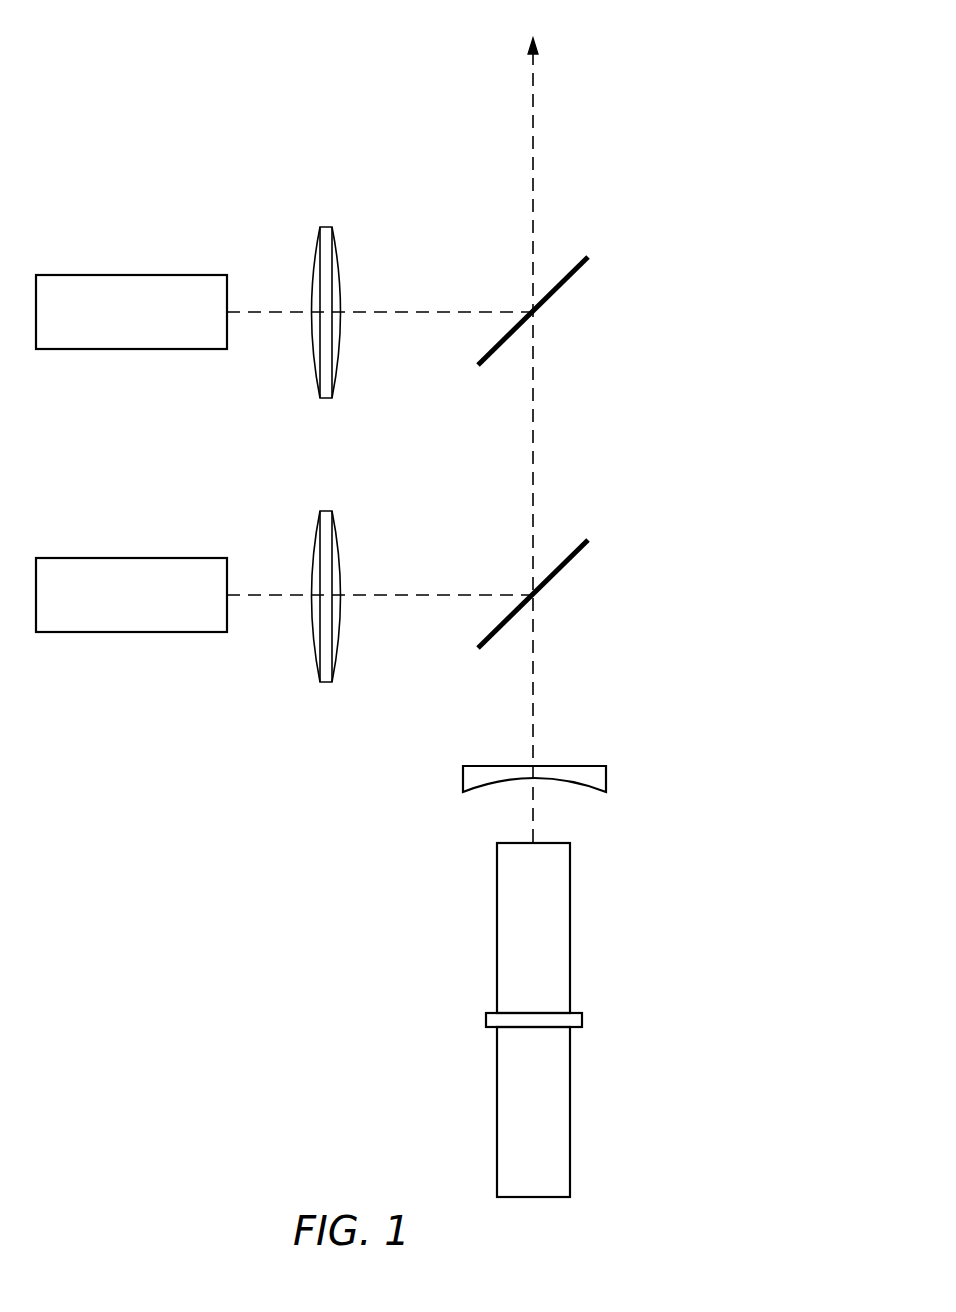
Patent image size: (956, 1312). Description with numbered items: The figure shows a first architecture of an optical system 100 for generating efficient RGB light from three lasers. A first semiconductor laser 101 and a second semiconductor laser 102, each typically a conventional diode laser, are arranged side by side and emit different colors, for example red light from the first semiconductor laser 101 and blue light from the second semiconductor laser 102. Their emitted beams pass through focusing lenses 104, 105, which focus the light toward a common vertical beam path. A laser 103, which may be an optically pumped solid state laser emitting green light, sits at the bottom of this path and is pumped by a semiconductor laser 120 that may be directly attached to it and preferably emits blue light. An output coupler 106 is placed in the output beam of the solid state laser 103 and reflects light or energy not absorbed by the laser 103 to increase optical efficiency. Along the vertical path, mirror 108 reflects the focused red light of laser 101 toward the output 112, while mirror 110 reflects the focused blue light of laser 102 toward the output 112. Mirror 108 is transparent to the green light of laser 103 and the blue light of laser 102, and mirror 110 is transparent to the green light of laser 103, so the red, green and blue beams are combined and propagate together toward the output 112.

The optical system 100 is at (173, 84).
The first semiconductor laser 101 is at (132, 275).
The second semiconductor laser 102 is at (130, 632).
The laser 103 is at (570, 927).
The focusing lens 104 is at (310, 270).
The focusing lens 105 is at (310, 635).
The output coupler 106 is at (606, 776).
The mirror 108 is at (563, 287).
The mirror 110 is at (563, 570).
The output 112 is at (539, 45).
The semiconductor laser 120 is at (570, 1110).